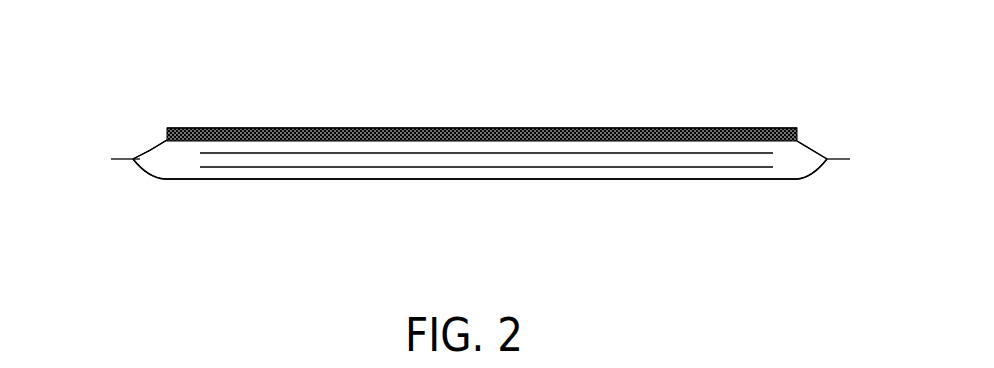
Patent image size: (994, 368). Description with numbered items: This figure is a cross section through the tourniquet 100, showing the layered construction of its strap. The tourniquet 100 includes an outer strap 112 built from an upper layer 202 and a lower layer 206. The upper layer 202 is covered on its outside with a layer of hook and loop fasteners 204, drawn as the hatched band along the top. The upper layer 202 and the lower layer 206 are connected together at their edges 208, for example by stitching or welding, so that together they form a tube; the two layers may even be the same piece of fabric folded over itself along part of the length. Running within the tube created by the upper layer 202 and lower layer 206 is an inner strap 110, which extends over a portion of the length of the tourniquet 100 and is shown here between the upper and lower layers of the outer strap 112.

The tourniquet 100 is at (138, 64).
The inner strap 110 is at (685, 153).
The outer strap 112 is at (133, 160).
The upper layer 202 is at (331, 128).
The layer of hook and loop fasteners 204 is at (530, 128).
The lower layer 206 is at (415, 179).
The edges 208 is at (133, 159).